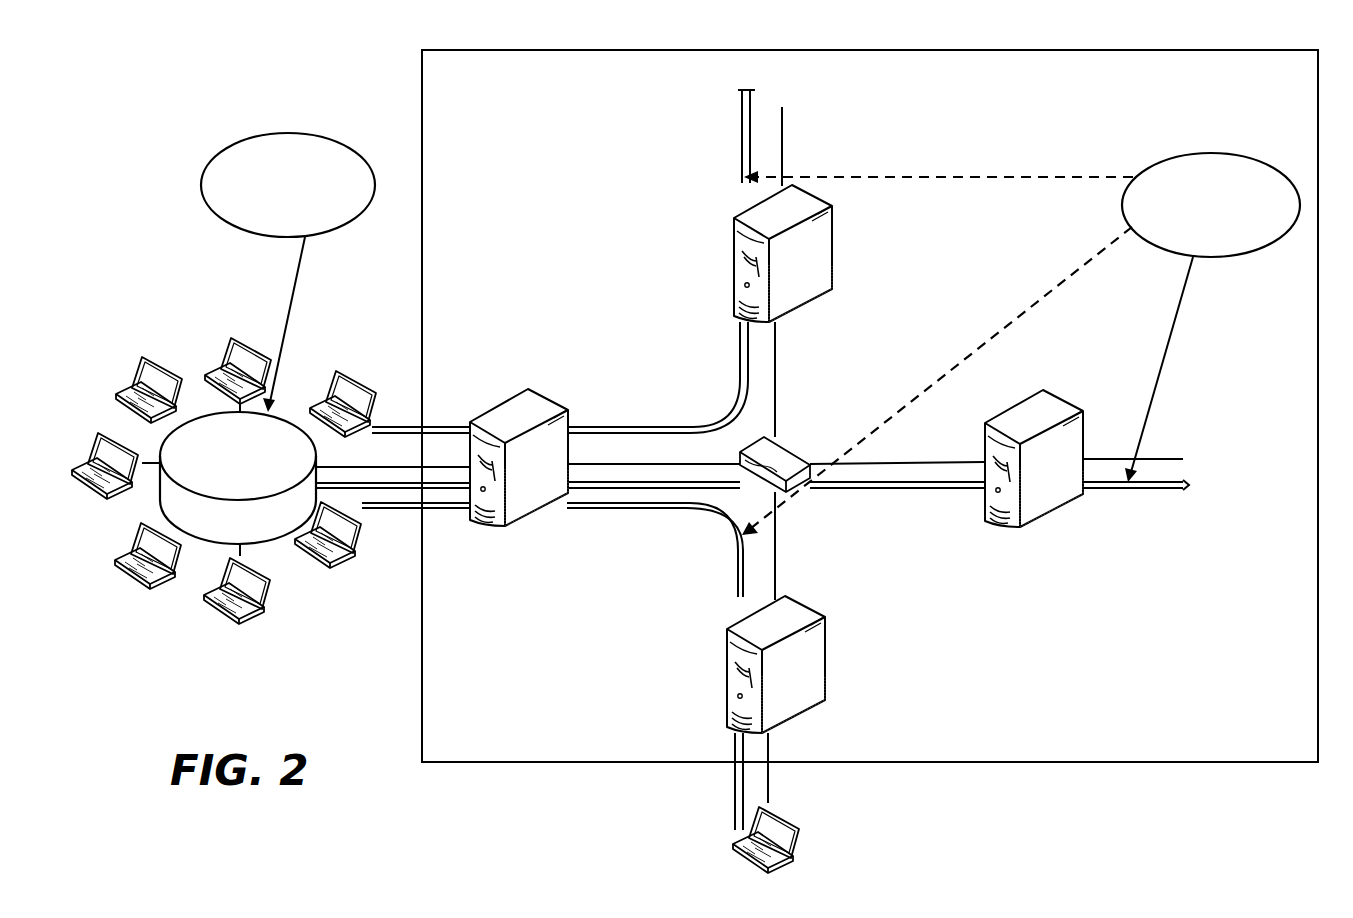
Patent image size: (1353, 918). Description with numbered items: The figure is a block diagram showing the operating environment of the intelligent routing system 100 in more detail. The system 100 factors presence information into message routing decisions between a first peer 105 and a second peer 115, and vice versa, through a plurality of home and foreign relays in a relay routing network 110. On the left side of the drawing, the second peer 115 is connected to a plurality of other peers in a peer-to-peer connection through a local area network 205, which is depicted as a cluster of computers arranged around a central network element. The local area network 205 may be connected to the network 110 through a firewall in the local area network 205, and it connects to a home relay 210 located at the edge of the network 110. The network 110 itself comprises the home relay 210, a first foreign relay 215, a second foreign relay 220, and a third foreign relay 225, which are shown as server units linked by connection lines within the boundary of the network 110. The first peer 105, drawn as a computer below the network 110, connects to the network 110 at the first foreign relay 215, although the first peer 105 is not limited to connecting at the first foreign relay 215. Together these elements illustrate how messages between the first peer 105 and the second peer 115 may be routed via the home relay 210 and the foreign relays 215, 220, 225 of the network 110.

The intelligent routing system 100 is at (326, 52).
The first peer 105 is at (805, 840).
The relay routing network 110 is at (873, 45).
The second peer 115 is at (163, 357).
The local area network 205 is at (238, 478).
The home relay 210 is at (541, 378).
The first foreign relay 215 is at (830, 668).
The second foreign relay 220 is at (1057, 388).
The third foreign relay 225 is at (834, 270).